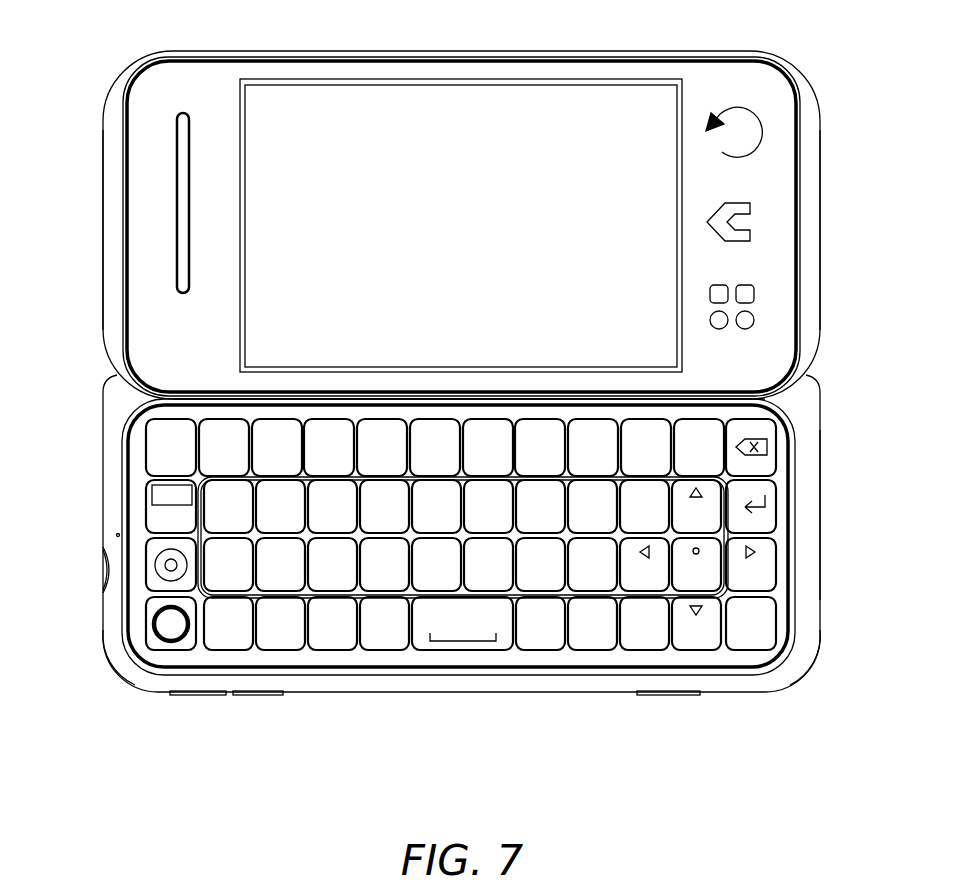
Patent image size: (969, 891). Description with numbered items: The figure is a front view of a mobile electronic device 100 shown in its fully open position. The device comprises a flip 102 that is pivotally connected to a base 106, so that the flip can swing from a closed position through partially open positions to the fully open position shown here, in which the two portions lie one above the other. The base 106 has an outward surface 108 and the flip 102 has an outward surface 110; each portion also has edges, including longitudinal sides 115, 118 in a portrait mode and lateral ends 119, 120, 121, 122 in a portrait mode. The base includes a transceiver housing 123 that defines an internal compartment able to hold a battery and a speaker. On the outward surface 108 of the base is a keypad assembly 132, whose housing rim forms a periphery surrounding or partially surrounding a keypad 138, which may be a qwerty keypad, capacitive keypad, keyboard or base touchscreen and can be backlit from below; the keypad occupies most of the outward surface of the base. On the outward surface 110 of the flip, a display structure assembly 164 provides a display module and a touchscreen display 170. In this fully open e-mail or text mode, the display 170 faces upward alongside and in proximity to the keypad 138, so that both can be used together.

The mobile electronic device 100 is at (98, 369).
The flip 102 is at (151, 58).
The base 106 is at (778, 688).
The outward surface of the base 108 is at (148, 446).
The outward surface of the flip 110 is at (147, 133).
The longitudinal side of the base 115 is at (640, 695).
The longitudinal side of the flip 118 is at (168, 51).
The lateral end of the base 119 is at (112, 570).
The lateral end of the base 120 is at (103, 208).
The lateral end of the flip 121 is at (820, 178).
The lateral end of the flip 122 is at (820, 500).
The transceiver housing 123 is at (812, 644).
The keypad assembly 132 is at (105, 640).
The keypad 138 is at (293, 641).
The display structure assembly 164 is at (250, 51).
The touchscreen display 170 is at (449, 100).